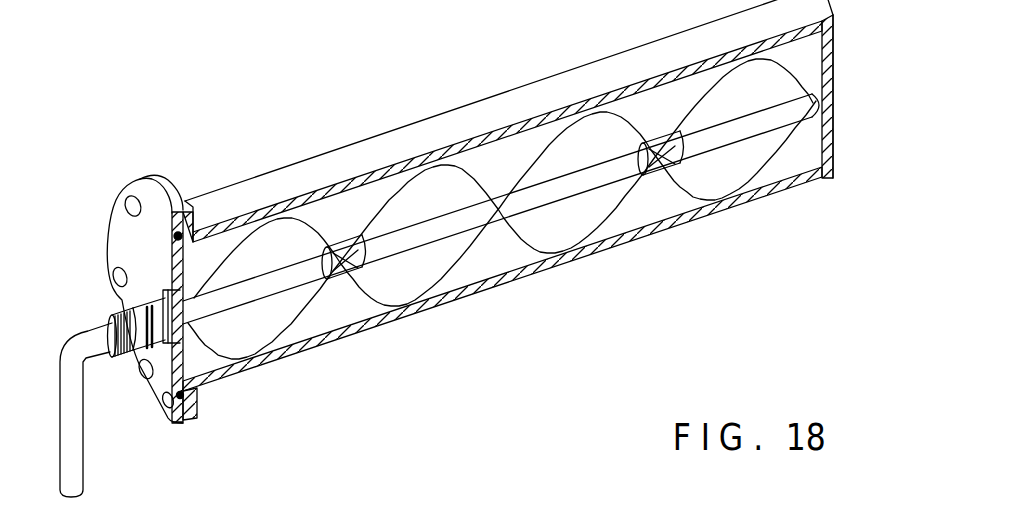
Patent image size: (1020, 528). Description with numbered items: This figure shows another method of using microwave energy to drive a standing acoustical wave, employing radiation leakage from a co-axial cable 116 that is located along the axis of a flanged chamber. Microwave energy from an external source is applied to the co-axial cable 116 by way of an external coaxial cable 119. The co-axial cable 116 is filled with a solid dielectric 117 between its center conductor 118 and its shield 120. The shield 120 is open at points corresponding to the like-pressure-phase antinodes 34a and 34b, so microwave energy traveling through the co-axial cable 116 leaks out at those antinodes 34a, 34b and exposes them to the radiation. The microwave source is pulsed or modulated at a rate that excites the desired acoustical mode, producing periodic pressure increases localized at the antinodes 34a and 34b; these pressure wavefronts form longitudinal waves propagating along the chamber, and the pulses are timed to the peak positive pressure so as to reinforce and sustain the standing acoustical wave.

The co-axial cable 116 is at (563, 163).
The solid dielectric 117 is at (657, 140).
The center conductor 118 is at (280, 218).
The external coaxial cable 119 is at (72, 438).
The shield 120 is at (430, 227).
The like-pressure-phase antinode 34a is at (668, 178).
The like-pressure-phase antinode 34b is at (347, 283).